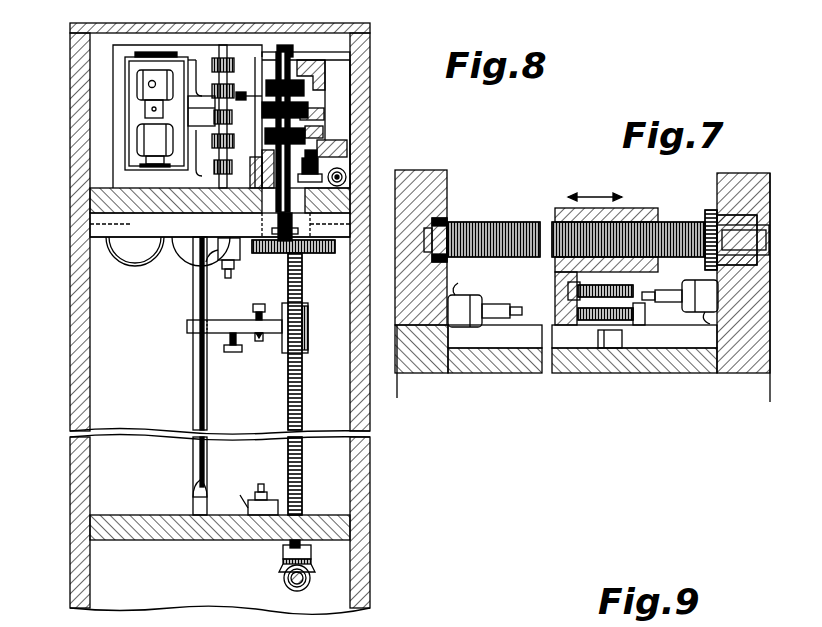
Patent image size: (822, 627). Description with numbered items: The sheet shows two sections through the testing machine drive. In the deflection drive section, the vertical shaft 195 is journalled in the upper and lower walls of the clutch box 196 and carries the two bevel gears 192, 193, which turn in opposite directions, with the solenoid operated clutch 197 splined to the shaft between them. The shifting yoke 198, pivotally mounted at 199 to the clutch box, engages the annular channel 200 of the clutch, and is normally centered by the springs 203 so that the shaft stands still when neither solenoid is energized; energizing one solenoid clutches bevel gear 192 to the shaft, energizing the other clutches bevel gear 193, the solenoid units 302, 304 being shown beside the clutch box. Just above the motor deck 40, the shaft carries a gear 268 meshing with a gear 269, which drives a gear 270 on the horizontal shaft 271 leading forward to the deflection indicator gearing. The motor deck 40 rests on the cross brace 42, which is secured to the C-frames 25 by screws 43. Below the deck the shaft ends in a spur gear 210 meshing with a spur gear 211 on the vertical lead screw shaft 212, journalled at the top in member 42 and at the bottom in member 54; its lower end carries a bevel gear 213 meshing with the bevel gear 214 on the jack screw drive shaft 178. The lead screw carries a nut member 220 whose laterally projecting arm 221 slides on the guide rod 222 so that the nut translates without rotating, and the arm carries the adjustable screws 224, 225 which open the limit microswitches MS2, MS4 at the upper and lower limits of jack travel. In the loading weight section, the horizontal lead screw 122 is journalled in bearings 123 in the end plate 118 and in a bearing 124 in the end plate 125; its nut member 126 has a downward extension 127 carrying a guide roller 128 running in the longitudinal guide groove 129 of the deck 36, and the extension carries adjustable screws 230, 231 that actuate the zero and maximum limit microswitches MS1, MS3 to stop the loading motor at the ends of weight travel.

In FIG. 8, the C-frame 25 is at (68, 280).
In FIG. 8, the motor deck 40 is at (100, 194).
In FIG. 8, the screws 43 is at (82, 226).
In FIG. 8, the gear 268 is at (256, 216).
In FIG. 8, the motor upper unit 302 is at (130, 84).
In FIG. 8, the motor lower unit 304 is at (138, 150).
In FIG. 8, the centering springs 203 is at (236, 66).
In FIG. 8, the vertical shaft 195 is at (292, 50).
In FIG. 8, the clutch box 196 is at (300, 72).
In FIG. 8, the bevel gear 192 is at (350, 76).
In FIG. 8, the shifting yoke 198 is at (240, 99).
In FIG. 8, the annular channel 200 is at (322, 99).
In FIG. 8, the pivot 199 is at (322, 109).
In FIG. 8, the solenoid operated clutch 197 is at (322, 121).
In FIG. 8, the bevel gear 193 is at (320, 134).
In FIG. 8, the gear 269 is at (348, 162).
In FIG. 8, the gear 270 is at (350, 156).
In FIG. 8, the horizontal shaft 271 is at (348, 176).
In FIG. 8, the horizontal cross brace 42 is at (132, 228).
In FIG. 8, the limit microswitch MS4 is at (223, 248).
In FIG. 8, the guide rod 222 is at (195, 293).
In FIG. 8, the spur gear 211 is at (278, 258).
In FIG. 8, the spur gear 210 is at (325, 254).
In FIG. 8, the lead screw shaft 212 is at (304, 398).
In FIG. 8, the nut member 220 is at (310, 313).
In FIG. 8, the laterally projecting arm 221 is at (246, 336).
In FIG. 8, the adjustable switch actuating screw 225 is at (253, 314).
In FIG. 8, the adjustable switch actuating screw 224 is at (258, 340).
In FIG. 8, the horizontally extending member 54 is at (144, 521).
In FIG. 8, the limit microswitch MS2 is at (262, 488).
In FIG. 8, the bevel gear 214 is at (312, 576).
In FIG. 8, the bevel gear 213 is at (282, 570).
In FIG. 8, the jack screw drive shaft 178 is at (307, 586).
In FIG. 7, the end plate 125 is at (452, 184).
In FIG. 7, the deck 36 is at (491, 374).
In FIG. 7, the longitudinal guide groove 129 is at (680, 352).
In FIG. 7, the end plate 118 is at (736, 176).
In FIG. 7, the bearing 124 is at (448, 216).
In FIG. 7, the horizontal lead screw 122 is at (497, 222).
In FIG. 7, the nut member 126 is at (562, 208).
In FIG. 7, the bearings 123 is at (742, 216).
In FIG. 7, the maximum limit microswitch MS3 is at (470, 298).
In FIG. 7, the zero limit microswitch MS1 is at (690, 314).
In FIG. 7, the downward extension 127 is at (570, 288).
In FIG. 7, the adjustable screw 230 is at (583, 303).
In FIG. 7, the adjustable screw 231 is at (640, 322).
In FIG. 7, the guide roller 128 is at (603, 338).